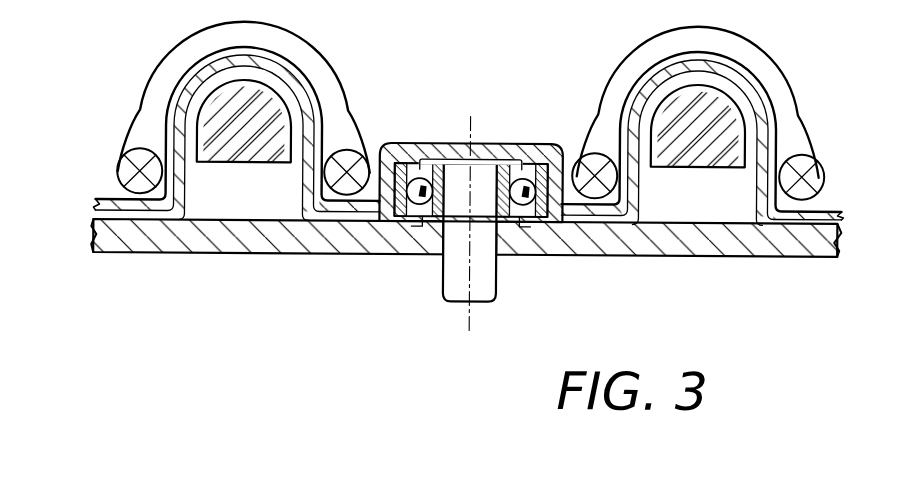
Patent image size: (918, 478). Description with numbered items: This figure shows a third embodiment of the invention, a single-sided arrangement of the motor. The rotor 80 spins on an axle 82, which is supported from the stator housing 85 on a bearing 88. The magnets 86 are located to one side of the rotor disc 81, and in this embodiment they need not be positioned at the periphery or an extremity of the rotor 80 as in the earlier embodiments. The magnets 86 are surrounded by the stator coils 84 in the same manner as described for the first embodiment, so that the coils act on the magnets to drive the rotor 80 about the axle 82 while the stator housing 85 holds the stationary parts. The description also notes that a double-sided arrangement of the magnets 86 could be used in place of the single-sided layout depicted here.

The rotor 80 is at (440, 189).
The rotor disc 81 is at (608, 255).
The axle 82 is at (460, 271).
The stator coils 84 is at (168, 62).
The stator housing 85 is at (111, 204).
The magnets 86 is at (230, 143).
The bearing 88 is at (508, 158).